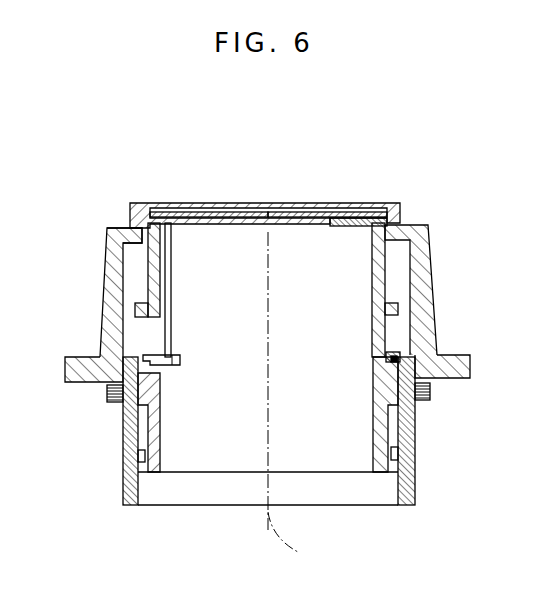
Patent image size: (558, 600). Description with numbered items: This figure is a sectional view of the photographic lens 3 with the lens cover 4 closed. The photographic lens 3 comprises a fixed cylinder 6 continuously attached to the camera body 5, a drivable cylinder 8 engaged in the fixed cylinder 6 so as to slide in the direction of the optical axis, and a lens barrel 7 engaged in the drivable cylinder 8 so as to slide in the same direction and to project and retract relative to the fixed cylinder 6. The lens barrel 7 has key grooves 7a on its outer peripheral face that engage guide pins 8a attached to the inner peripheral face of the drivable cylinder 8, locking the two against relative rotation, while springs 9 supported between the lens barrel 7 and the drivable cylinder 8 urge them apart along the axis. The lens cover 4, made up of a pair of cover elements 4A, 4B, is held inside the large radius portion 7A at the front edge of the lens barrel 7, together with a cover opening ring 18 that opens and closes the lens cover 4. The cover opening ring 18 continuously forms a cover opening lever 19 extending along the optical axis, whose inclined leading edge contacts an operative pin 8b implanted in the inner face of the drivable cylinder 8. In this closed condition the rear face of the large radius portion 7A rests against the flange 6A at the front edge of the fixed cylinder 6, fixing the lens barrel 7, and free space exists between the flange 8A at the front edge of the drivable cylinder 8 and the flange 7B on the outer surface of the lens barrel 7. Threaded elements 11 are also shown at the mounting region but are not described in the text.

The photographic lens 3 is at (442, 183).
The lens cover 4 is at (305, 131).
The cover element 4A is at (293, 200).
The cover element 4B is at (235, 200).
The camera body 5 is at (80, 357).
The fixed cylinder 6 is at (105, 280).
The flange 6A is at (122, 227).
The lens barrel 7 is at (384, 265).
The large radius portion 7A is at (385, 210).
The flange 7B is at (397, 309).
The key groove 7a is at (141, 435).
The drivable cylinder 8 is at (128, 485).
The flange 8A is at (395, 352).
The guide pin 8a is at (145, 460).
The operative pin 8b is at (178, 362).
The spring 9 is at (412, 357).
The threaded stud 11 is at (97, 402).
The cover opening ring 18 is at (347, 226).
The cover opening lever 19 is at (170, 290).